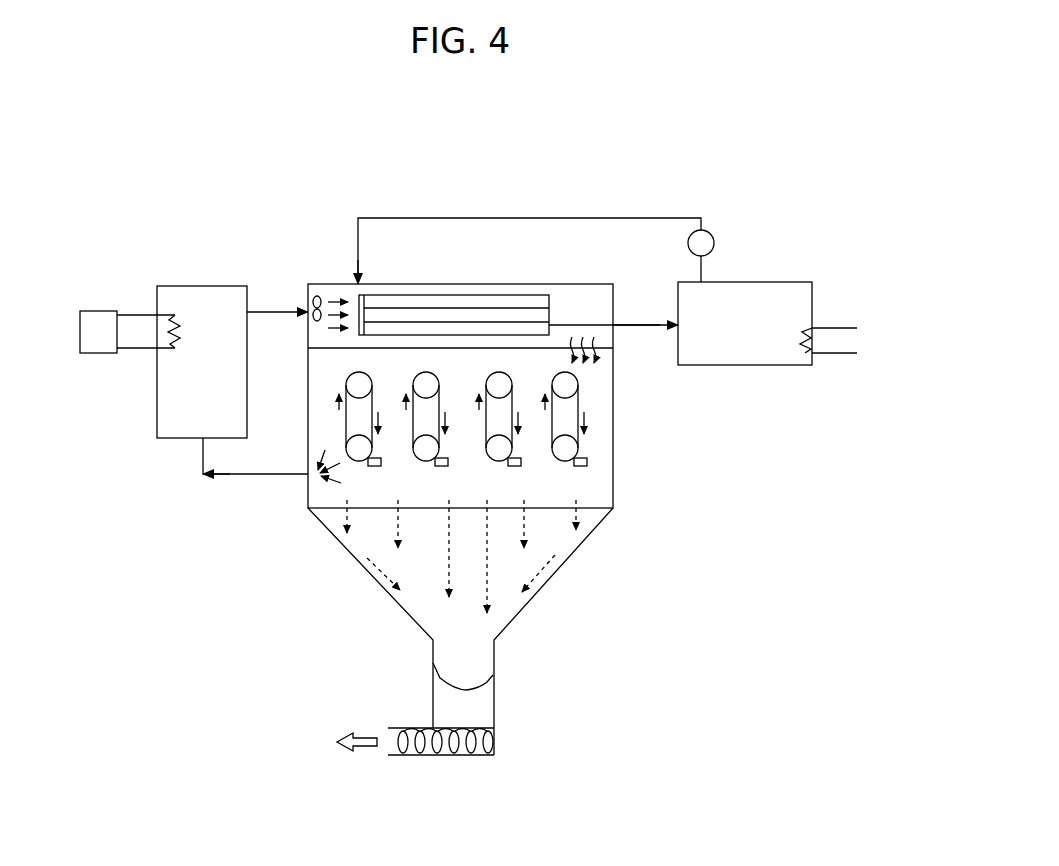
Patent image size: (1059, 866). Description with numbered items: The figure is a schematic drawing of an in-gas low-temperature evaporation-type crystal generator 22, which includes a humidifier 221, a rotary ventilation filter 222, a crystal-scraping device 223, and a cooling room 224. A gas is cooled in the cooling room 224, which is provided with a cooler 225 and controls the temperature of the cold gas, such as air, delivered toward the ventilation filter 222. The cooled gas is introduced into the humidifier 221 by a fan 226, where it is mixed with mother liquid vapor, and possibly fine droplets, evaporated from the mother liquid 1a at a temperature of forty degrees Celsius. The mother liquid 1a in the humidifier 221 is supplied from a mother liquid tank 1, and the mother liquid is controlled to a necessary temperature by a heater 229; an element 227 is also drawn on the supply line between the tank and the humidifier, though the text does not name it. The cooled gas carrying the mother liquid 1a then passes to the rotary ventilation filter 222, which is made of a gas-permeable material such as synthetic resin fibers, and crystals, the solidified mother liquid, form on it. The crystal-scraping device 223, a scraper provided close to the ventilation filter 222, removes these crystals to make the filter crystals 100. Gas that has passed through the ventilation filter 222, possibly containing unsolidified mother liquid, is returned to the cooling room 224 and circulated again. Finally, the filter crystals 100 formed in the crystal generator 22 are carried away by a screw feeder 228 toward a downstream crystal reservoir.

The low-temperature evaporation-type crystal generator 22 is at (624, 146).
The cooler 225 is at (101, 322).
The cooling room 224 is at (170, 428).
The fan 226 is at (320, 298).
The humidifier 221 is at (444, 303).
The pump 227 is at (715, 240).
The mother liquid tank 1 is at (745, 367).
The mother liquid 1a is at (640, 327).
The heater 229 is at (799, 355).
The rotary ventilation filter 222 is at (577, 398).
The crystal-scraping device 223 is at (581, 466).
The filter crystals 100 is at (452, 700).
The screw feeder 228 is at (443, 757).